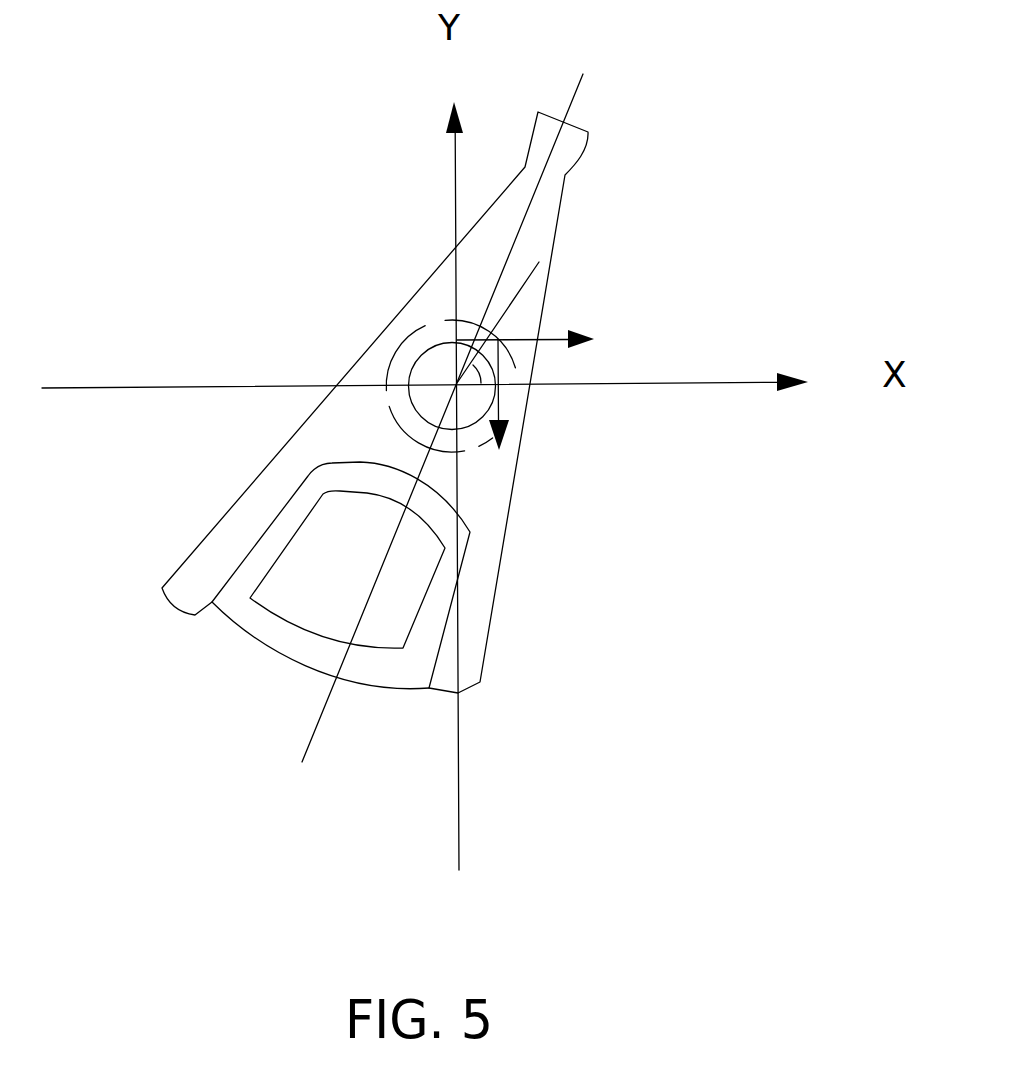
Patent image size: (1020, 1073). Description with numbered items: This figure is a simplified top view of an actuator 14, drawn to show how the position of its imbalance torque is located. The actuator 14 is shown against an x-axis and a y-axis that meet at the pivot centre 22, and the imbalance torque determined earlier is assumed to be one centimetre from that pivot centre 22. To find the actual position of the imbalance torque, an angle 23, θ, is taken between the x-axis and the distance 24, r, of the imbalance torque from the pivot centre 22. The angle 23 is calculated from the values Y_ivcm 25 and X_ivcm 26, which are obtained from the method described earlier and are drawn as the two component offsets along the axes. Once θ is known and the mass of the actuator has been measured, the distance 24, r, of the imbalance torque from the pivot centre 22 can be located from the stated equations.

The actuator 14 is at (477, 622).
The pivot centre 22 is at (457, 383).
The angle 23 is at (490, 386).
The distance 24 is at (539, 262).
The Y_ivcm 25 is at (498, 421).
The X_ivcm 26 is at (560, 339).